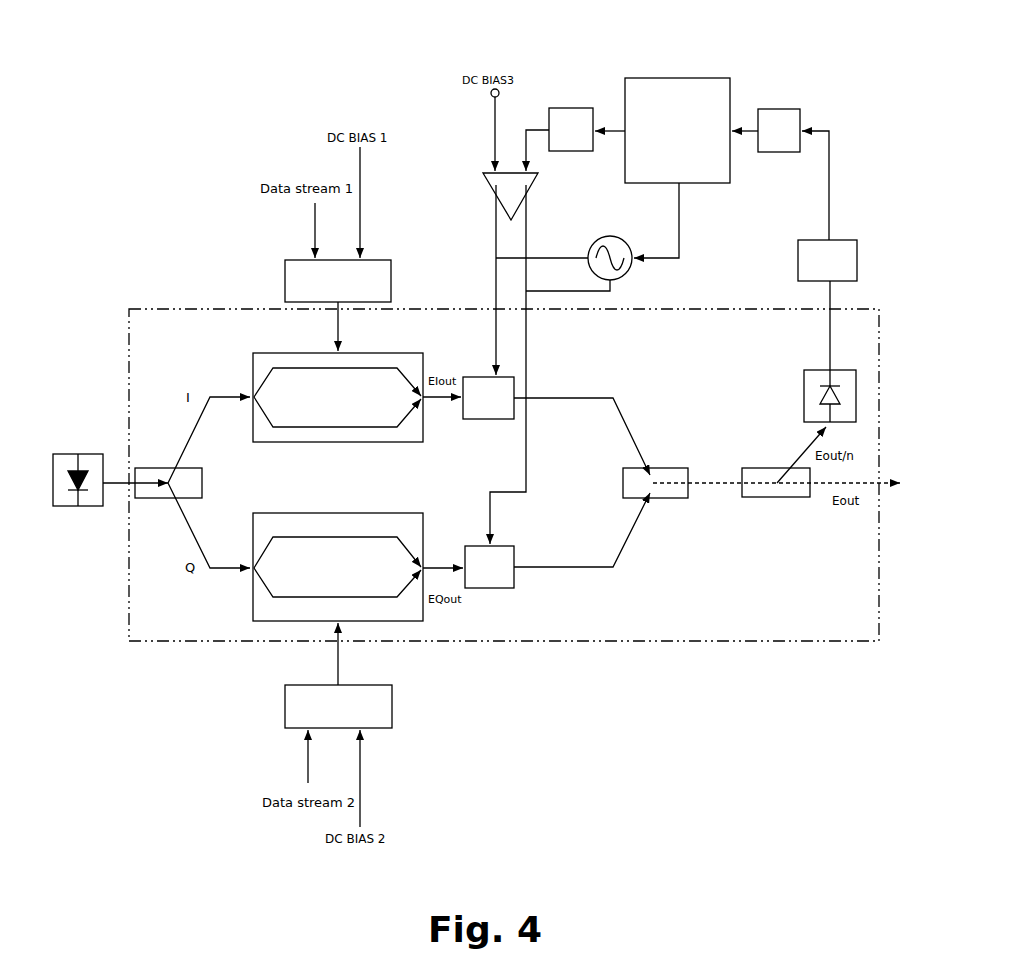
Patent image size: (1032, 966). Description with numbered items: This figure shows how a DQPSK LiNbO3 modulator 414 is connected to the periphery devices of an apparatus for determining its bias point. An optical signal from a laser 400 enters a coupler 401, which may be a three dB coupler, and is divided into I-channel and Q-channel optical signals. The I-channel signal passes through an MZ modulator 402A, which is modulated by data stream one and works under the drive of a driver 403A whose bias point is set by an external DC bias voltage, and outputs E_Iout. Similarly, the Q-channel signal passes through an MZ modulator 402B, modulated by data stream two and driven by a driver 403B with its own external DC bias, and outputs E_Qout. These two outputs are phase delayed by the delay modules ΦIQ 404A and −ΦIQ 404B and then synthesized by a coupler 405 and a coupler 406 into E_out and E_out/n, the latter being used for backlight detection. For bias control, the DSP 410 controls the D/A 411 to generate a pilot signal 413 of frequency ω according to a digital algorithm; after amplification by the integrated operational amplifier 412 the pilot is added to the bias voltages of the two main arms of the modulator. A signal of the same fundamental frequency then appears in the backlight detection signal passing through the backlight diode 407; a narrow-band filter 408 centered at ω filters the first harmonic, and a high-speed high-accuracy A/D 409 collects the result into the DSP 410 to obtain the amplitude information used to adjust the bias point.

The laser 400 is at (90, 508).
The coupler 401 is at (137, 468).
The MZ modulator 402A is at (270, 352).
The MZ modulator 402B is at (275, 622).
The driver 403A is at (283, 270).
The driver 403B is at (285, 708).
The delay module ΦIQ 404A is at (514, 387).
The delay module −ΦIQ 404B is at (508, 578).
The coupler 405 is at (672, 500).
The coupler 406 is at (780, 500).
The backlight diode 407 is at (856, 388).
The narrow-band filter 408 is at (846, 240).
The A/D 409 is at (783, 109).
The DSP 410 is at (678, 78).
The D/A 411 is at (570, 108).
The integrated operational amplifier 412 is at (482, 188).
The pilot signal 413 is at (630, 272).
The modulator 414 is at (620, 641).